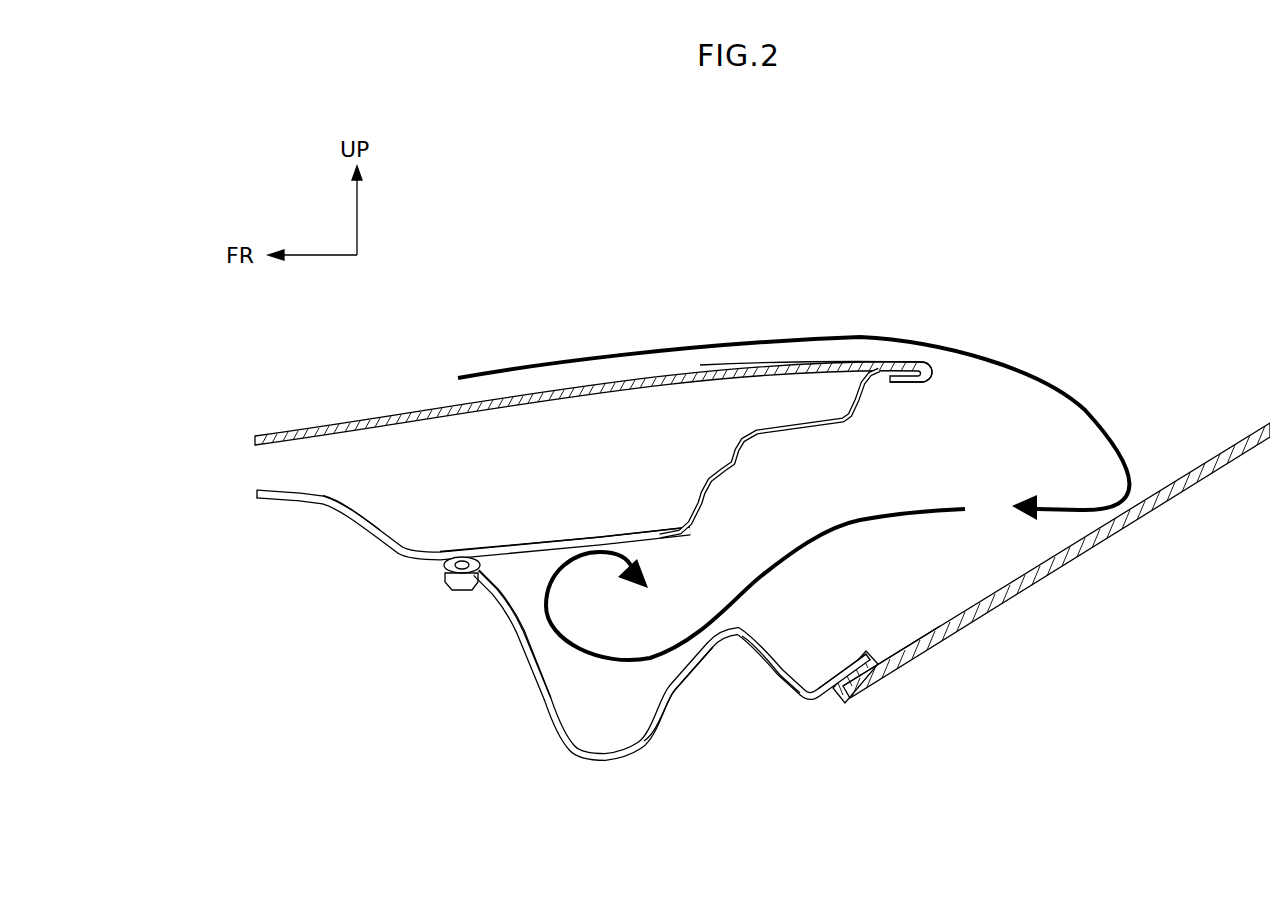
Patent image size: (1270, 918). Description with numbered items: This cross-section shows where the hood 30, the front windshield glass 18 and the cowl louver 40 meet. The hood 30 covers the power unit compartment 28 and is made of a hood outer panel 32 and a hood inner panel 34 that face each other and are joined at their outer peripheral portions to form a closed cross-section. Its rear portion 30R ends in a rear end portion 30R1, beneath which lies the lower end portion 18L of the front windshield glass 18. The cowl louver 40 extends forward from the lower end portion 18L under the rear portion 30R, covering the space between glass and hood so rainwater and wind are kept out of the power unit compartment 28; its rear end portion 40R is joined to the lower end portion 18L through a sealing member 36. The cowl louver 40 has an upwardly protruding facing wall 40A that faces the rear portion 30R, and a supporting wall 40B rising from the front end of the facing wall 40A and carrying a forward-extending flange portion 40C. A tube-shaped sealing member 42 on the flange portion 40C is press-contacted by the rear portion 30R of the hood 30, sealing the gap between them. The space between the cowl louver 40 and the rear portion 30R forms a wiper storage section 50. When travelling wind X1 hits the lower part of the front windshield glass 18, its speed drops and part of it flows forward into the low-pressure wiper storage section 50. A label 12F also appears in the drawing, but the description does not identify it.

The front portion of vehicle body 12F is at (586, 232).
The front windshield glass 18 is at (1056, 542).
The lower end portion of the front windshield glass 18L is at (927, 653).
The power unit compartment 28 is at (534, 496).
The hood 30 is at (609, 366).
The rear portion of the hood 30R is at (822, 335).
The rear end portion of the hood 30R1 is at (925, 360).
The hood outer panel 32 is at (413, 414).
The hood inner panel 34 is at (383, 538).
The sealing member 36 is at (867, 680).
The cowl louver 40 is at (636, 701).
The facing wall 40A is at (680, 693).
The supporting wall 40B is at (525, 665).
The flange portion 40C is at (450, 587).
The rear end portion of the cowl louver 40R is at (834, 670).
The sealing member 42 is at (490, 553).
The wiper storage section 50 is at (793, 600).
The travelling wind X1 is at (1060, 381).